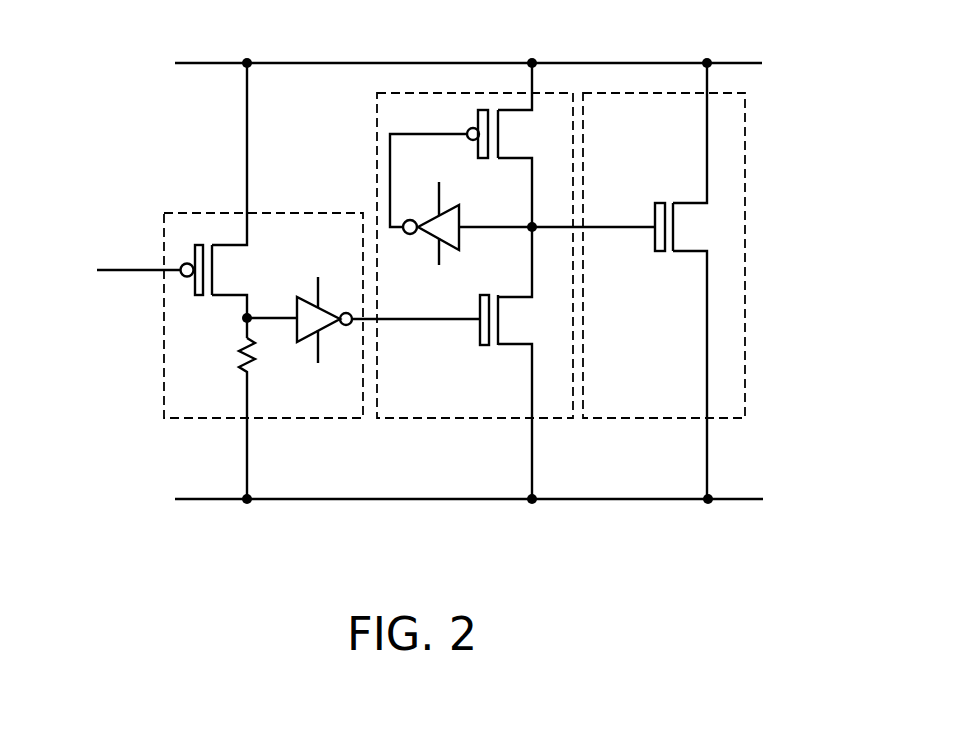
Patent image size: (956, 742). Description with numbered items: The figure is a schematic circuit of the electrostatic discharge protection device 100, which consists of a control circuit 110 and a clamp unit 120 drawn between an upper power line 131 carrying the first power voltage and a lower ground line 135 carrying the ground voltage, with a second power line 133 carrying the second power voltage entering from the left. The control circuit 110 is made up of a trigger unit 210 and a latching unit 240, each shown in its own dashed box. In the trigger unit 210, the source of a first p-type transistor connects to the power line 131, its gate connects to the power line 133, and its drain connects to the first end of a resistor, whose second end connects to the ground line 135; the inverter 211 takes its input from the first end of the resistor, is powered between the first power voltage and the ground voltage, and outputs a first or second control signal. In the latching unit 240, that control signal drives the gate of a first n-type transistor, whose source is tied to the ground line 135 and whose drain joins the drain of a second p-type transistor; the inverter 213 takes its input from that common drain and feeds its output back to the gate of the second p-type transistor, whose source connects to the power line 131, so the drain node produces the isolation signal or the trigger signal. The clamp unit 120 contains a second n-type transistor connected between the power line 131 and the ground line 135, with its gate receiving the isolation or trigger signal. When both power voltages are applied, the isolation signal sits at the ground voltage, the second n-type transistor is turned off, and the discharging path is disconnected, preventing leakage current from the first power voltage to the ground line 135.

The electrostatic discharge protection device 100 is at (429, 328).
The control circuit 110 is at (443, 458).
The clamp unit 120 is at (604, 418).
The power line 131 is at (497, 63).
The power line 133 is at (122, 272).
The ground line 135 is at (497, 500).
The trigger unit 210 is at (263, 281).
The inverter 211 is at (337, 314).
The inverter 213 is at (483, 202).
The latching unit 240 is at (503, 281).